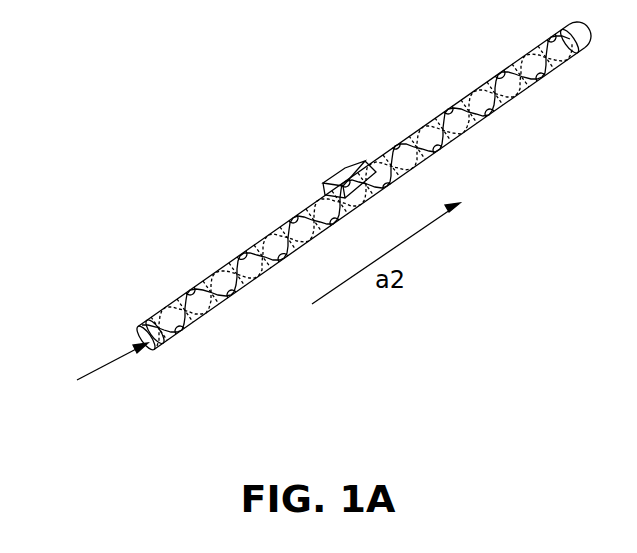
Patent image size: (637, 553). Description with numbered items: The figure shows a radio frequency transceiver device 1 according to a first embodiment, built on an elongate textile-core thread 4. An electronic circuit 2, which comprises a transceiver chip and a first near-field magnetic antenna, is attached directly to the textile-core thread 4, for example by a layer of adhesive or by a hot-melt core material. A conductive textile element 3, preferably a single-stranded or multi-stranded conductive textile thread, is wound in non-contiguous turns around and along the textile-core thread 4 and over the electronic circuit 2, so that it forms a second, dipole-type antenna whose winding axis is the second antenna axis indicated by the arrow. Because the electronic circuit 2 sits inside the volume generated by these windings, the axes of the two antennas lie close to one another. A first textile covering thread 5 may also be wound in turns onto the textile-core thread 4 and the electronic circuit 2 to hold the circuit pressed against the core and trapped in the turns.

The radio frequency transceiver device 1 is at (322, 211).
The electronic circuit 2 is at (340, 166).
The conductive textile element 3 is at (237, 308).
The textile-core thread 4 is at (101, 372).
The first textile covering thread 5 is at (512, 103).